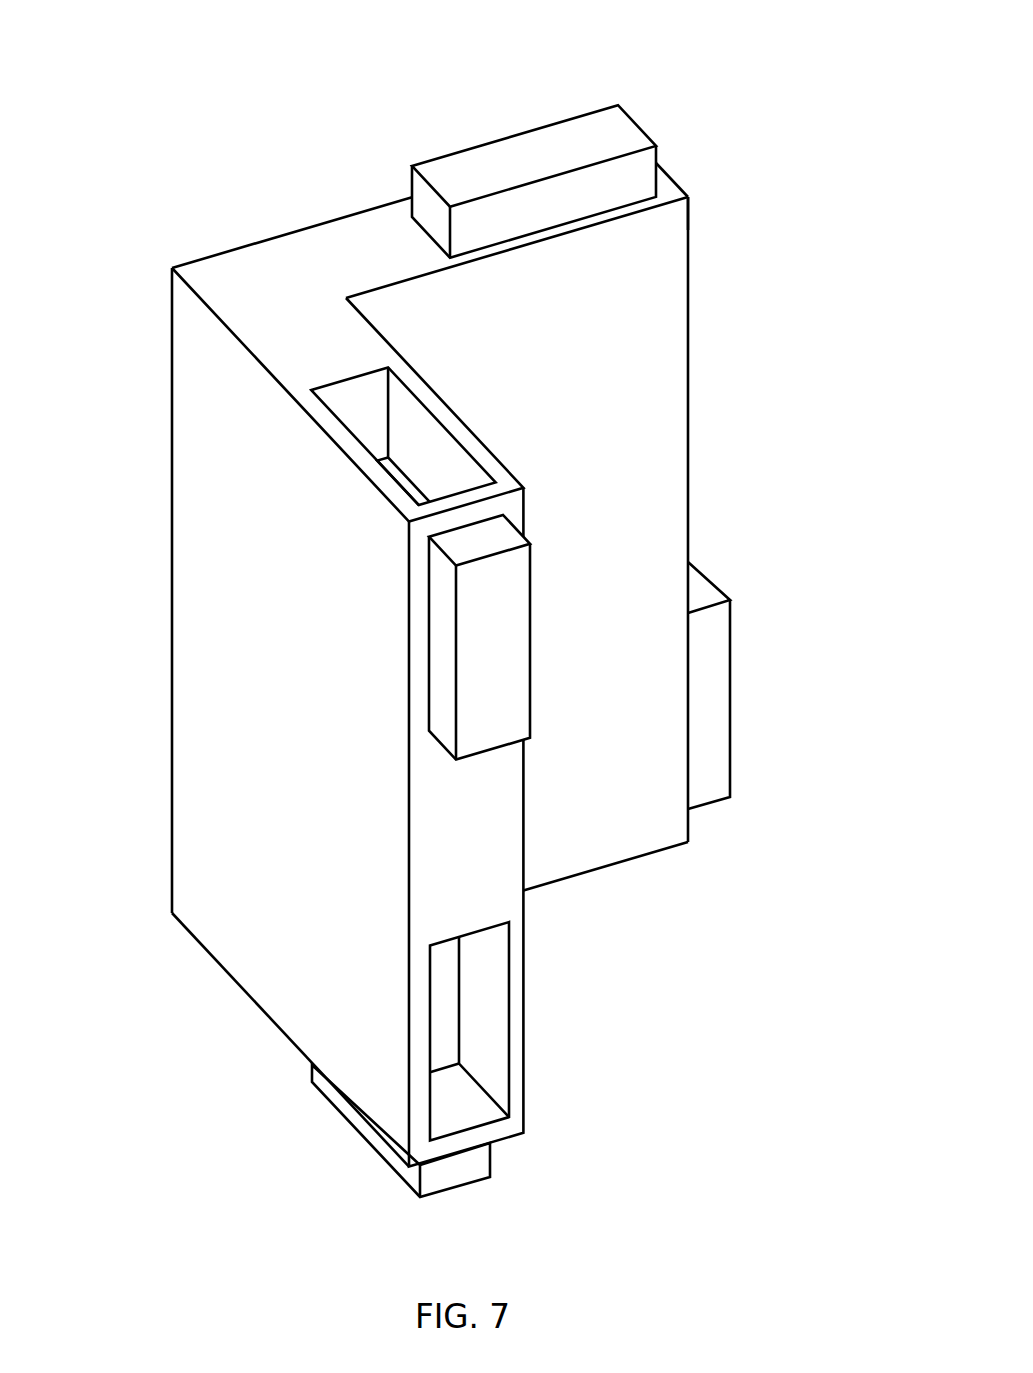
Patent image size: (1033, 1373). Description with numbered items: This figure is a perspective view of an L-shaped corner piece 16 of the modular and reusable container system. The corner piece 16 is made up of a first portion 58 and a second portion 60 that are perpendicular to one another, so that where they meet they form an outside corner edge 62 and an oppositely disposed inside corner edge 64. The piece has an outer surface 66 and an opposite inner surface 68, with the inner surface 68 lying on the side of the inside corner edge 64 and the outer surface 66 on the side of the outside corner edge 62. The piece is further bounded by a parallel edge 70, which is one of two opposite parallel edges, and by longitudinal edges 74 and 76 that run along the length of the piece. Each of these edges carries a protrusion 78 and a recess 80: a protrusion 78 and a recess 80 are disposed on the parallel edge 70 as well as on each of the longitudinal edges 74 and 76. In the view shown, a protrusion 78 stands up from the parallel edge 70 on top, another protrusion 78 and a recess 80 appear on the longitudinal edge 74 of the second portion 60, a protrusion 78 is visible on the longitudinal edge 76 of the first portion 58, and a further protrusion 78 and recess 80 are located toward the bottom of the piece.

The L-shaped corner piece 16 is at (182, 86).
The first portion 58 is at (681, 222).
The second portion 60 is at (409, 885).
The outside corner edge 62 is at (172, 576).
The inside corner edge 64 is at (350, 300).
The outer surface 66 is at (223, 775).
The inner surface 68 is at (662, 513).
The parallel edge 70 is at (325, 245).
The longitudinal edge 74 is at (497, 900).
The longitudinal edge 76 is at (689, 438).
The protrusion 78 is at (487, 158).
The recess 80 is at (355, 422).